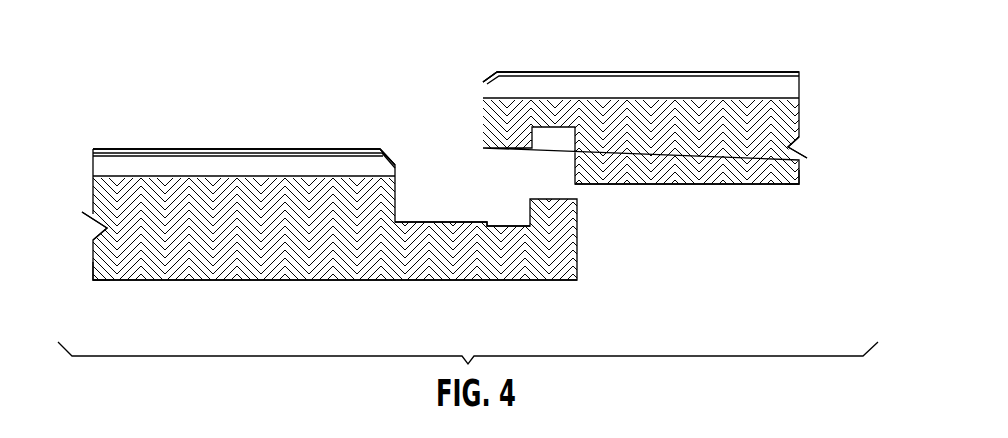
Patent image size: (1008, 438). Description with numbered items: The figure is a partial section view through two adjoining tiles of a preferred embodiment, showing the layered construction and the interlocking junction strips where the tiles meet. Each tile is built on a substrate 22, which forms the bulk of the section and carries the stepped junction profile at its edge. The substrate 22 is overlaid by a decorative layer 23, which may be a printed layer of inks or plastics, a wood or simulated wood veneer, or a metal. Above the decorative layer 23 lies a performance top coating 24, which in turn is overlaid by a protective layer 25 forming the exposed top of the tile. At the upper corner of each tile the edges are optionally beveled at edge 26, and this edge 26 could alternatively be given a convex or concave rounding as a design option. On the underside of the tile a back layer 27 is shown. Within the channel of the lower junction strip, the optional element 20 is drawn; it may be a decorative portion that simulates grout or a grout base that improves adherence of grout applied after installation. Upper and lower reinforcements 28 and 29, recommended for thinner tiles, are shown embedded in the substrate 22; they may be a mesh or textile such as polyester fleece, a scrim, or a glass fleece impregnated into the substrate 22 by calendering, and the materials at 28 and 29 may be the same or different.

The optional decorative portion or grout base 20 is at (448, 222).
The substrate 22 is at (259, 236).
The decorative layer 23 is at (93, 178).
The performance top coating 24 is at (93, 149).
The protective layer 25 is at (178, 149).
The beveled edge 26 is at (390, 152).
The back layer 27 is at (273, 281).
The upper reinforcement 28 is at (92, 192).
The lower reinforcement 29 is at (92, 275).